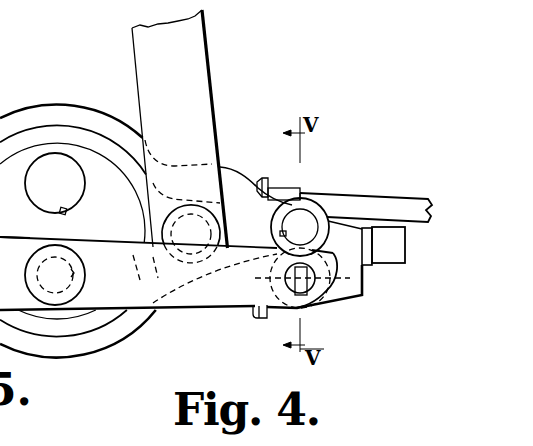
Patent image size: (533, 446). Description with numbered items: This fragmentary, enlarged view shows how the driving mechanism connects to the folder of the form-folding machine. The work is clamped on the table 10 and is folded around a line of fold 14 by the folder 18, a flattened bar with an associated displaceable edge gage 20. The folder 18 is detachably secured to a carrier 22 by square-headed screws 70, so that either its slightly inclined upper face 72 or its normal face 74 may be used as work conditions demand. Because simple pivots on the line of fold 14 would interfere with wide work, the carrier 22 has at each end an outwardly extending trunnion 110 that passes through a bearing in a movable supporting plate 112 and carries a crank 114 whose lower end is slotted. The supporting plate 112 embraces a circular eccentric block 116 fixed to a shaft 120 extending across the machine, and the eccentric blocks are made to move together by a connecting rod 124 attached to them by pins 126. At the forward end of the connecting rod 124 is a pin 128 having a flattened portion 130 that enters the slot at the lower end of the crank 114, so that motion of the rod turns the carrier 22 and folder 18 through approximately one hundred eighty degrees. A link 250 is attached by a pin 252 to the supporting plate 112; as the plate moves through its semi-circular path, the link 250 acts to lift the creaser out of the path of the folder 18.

The table 10 is at (398, 204).
The line of fold 14 is at (301, 197).
The folder 18 is at (300, 192).
The edge gage 20 is at (266, 181).
The carrier 22 is at (188, 283).
The square-headed screws 70 is at (405, 237).
The upper face 72 is at (278, 190).
The normal face 74 is at (285, 312).
The trunnions 110 is at (301, 227).
The supporting plates 112 is at (77, 345).
The crank 114 is at (272, 233).
The eccentric block 116 is at (100, 227).
The shaft 120 is at (42, 168).
The connecting rod 124 is at (15, 238).
The pins 126 is at (75, 272).
The pin 128 is at (284, 278).
The flattened portion 130 is at (350, 278).
The links 250 is at (200, 51).
The pins 252 is at (178, 212).